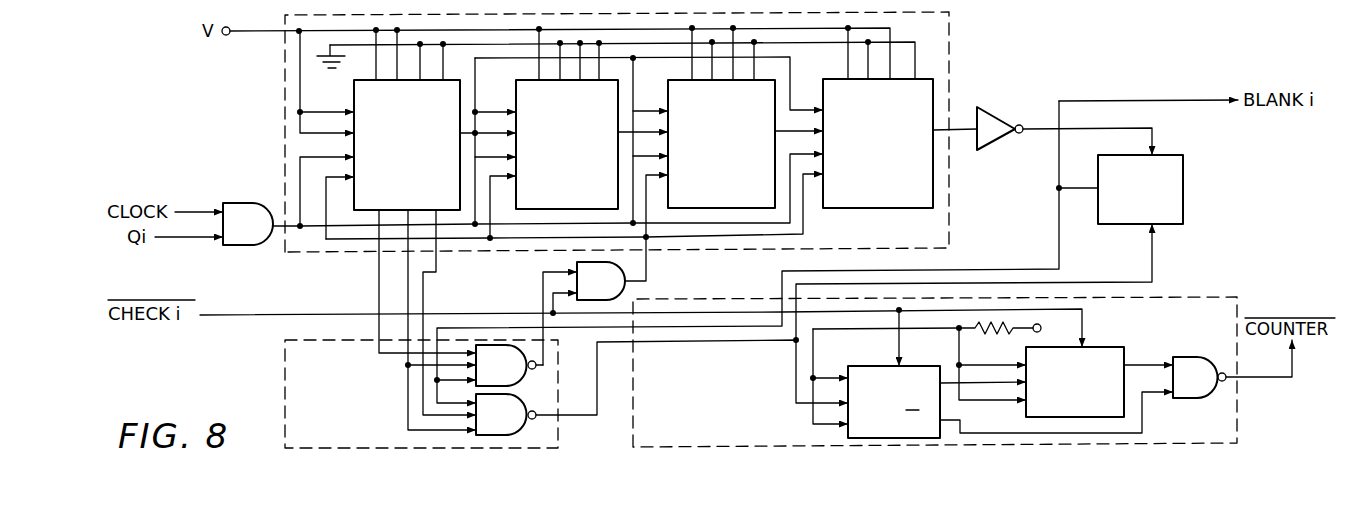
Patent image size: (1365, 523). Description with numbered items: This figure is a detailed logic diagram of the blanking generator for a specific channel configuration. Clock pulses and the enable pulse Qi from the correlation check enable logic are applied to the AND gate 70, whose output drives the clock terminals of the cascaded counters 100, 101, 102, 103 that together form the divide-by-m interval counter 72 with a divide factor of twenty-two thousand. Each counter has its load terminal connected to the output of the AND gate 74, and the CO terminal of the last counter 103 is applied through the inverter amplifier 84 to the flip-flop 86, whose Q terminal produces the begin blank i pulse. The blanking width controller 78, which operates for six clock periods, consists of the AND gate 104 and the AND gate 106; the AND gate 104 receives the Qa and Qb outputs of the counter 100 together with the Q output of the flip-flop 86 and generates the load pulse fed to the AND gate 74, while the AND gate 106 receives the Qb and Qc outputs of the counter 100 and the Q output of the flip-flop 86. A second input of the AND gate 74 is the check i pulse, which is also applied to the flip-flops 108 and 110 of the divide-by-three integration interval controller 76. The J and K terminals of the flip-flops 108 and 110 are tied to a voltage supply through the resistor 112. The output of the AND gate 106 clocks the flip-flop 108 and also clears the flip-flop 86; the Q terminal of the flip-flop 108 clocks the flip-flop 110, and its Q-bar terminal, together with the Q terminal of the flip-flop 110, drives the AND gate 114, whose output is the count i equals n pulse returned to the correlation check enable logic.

The AND gate 70 is at (253, 206).
The divide-by-m interval counter 72 is at (625, 221).
The AND gate 74 is at (605, 277).
The integration interval control counter 76 is at (937, 372).
The blanking width controller 78 is at (534, 394).
The inverter amplifier 84 is at (988, 118).
The flip-flop 86 is at (1172, 178).
The counter 100 is at (443, 168).
The counter 101 is at (600, 168).
The counter 102 is at (755, 168).
The counter 103 is at (910, 167).
The AND gate 104 is at (515, 376).
The AND gate 106 is at (515, 425).
The flip-flop 108 is at (881, 374).
The flip-flop 110 is at (1124, 336).
The resistor 112 is at (1000, 341).
The AND gate 114 is at (1186, 362).